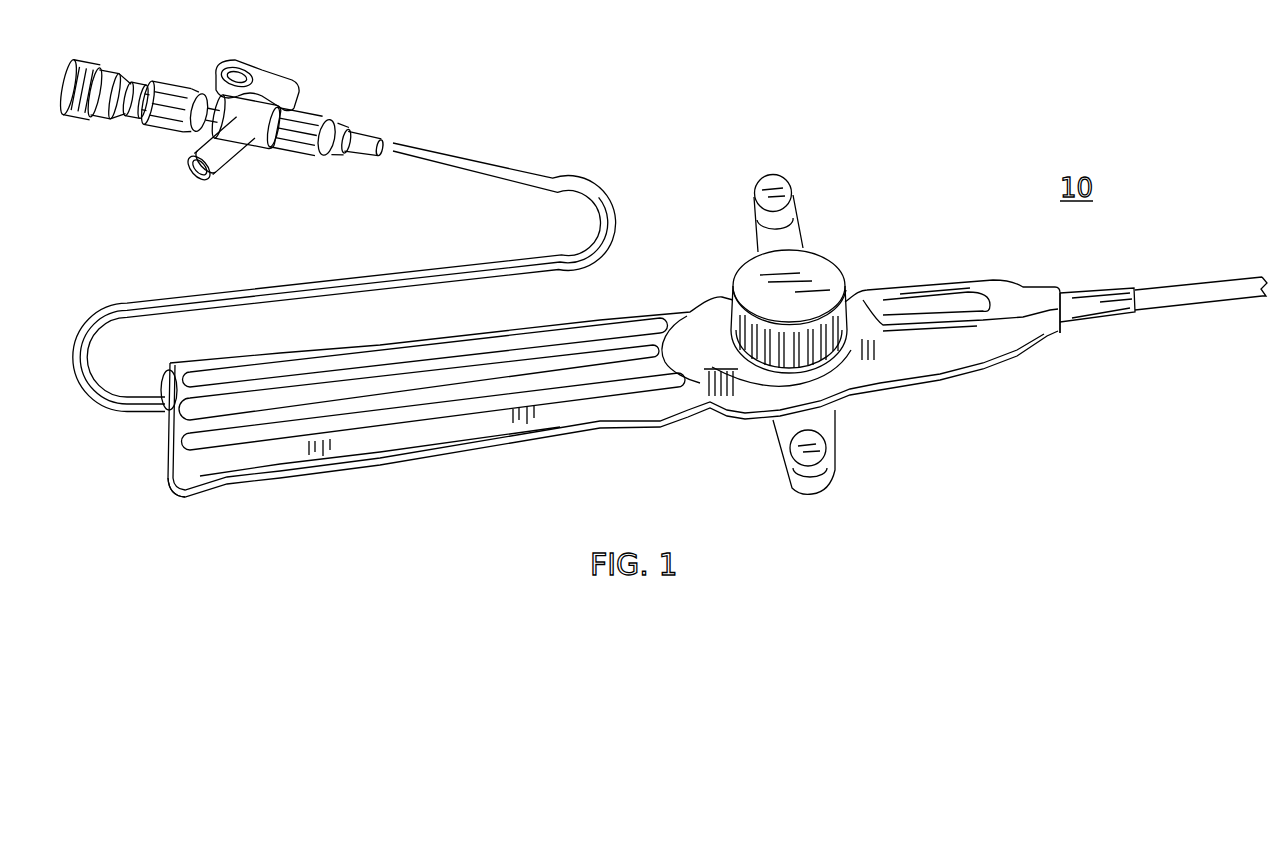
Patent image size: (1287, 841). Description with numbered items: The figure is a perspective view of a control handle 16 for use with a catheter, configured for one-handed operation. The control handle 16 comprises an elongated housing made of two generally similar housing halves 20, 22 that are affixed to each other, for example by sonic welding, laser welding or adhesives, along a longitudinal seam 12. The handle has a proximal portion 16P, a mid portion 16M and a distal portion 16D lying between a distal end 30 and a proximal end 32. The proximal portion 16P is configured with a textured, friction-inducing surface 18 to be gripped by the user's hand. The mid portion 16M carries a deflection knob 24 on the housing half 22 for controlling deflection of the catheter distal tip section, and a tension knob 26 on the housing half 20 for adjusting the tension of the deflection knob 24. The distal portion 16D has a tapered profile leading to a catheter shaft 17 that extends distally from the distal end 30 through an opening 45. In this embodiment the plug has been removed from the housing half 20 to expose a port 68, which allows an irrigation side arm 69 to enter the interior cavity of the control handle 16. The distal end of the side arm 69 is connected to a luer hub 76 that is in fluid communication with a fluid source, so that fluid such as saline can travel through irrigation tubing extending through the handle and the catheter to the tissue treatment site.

The longitudinal seam 12 is at (614, 387).
The control handle 16 is at (614, 387).
The proximal portion 16P is at (297, 477).
The mid portion 16M is at (748, 397).
The distal portion 16D is at (938, 282).
The catheter shaft 17 is at (1220, 285).
The textured friction-inducing surface 18 is at (393, 358).
The housing half 20 is at (613, 317).
The housing half 22 is at (642, 433).
The deflection knob 24 is at (838, 436).
The tension knob 26 is at (827, 260).
The distal end 30 is at (1061, 332).
The proximal end 32 is at (185, 495).
The opening 45 is at (1137, 295).
The port 68 is at (167, 373).
The irrigation side arm 69 is at (205, 298).
The luer hub 76 is at (273, 79).